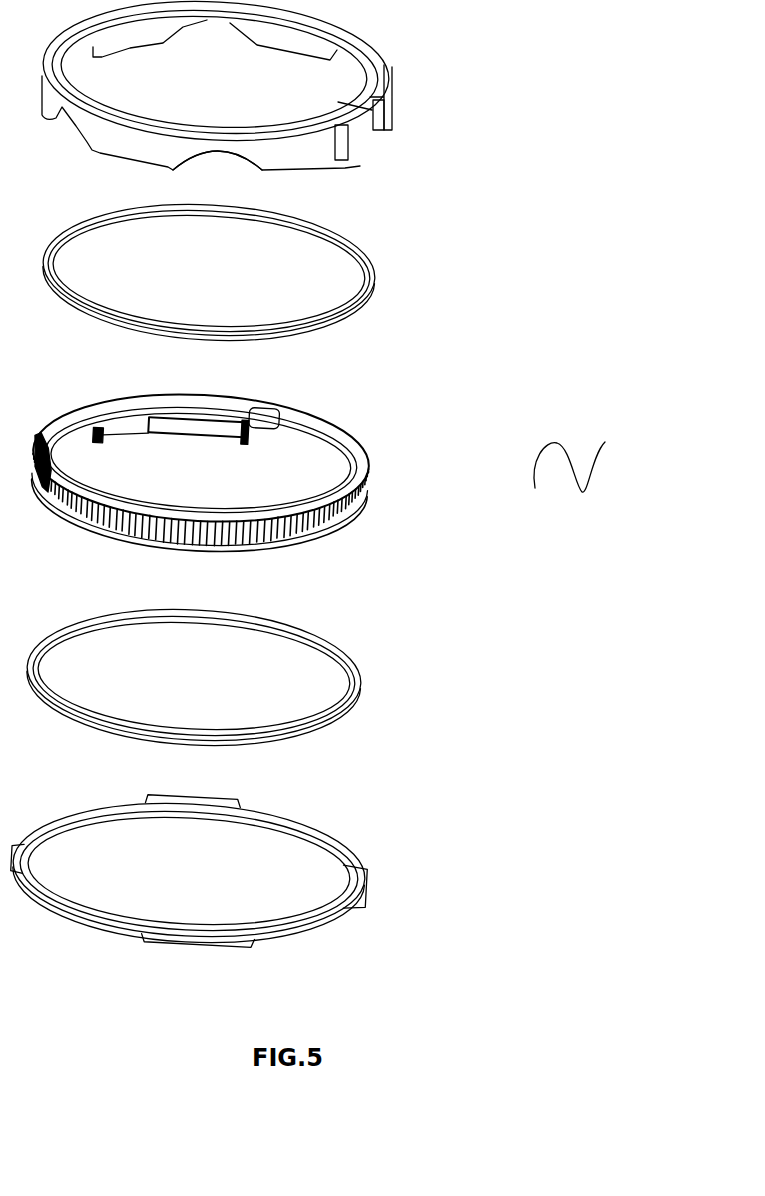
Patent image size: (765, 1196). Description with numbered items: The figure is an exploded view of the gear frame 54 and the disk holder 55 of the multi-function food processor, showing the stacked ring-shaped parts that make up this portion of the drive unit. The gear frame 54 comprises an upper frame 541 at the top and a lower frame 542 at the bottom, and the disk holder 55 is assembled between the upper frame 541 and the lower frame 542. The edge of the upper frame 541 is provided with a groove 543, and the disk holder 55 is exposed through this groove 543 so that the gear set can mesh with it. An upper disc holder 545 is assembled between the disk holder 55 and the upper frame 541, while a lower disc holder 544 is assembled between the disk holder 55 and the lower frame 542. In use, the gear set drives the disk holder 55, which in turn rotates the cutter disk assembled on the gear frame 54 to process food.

The gear frame 54 is at (594, 456).
The upper frame 541 is at (390, 70).
The lower frame 542 is at (350, 862).
The groove 543 is at (262, 168).
The lower disc holder 544 is at (362, 679).
The upper disc holder 545 is at (352, 312).
The disk holder 55 is at (370, 478).